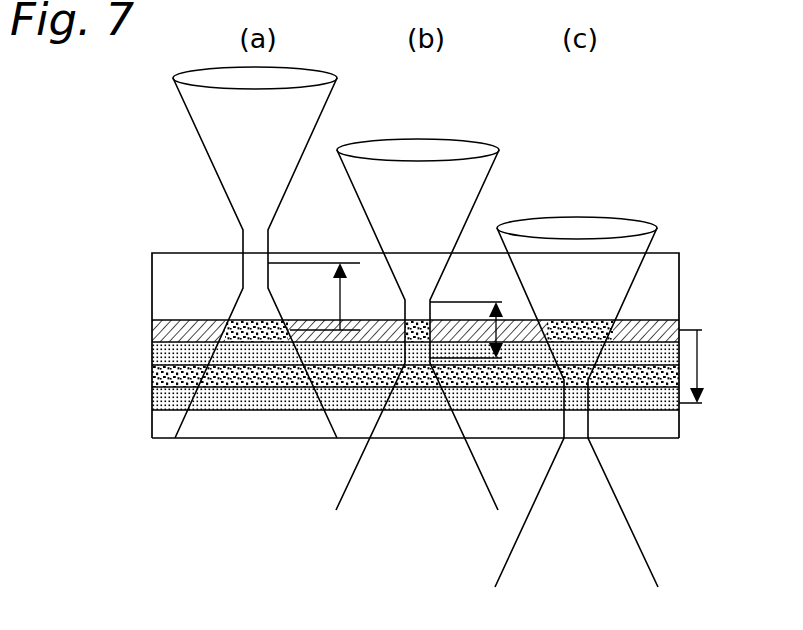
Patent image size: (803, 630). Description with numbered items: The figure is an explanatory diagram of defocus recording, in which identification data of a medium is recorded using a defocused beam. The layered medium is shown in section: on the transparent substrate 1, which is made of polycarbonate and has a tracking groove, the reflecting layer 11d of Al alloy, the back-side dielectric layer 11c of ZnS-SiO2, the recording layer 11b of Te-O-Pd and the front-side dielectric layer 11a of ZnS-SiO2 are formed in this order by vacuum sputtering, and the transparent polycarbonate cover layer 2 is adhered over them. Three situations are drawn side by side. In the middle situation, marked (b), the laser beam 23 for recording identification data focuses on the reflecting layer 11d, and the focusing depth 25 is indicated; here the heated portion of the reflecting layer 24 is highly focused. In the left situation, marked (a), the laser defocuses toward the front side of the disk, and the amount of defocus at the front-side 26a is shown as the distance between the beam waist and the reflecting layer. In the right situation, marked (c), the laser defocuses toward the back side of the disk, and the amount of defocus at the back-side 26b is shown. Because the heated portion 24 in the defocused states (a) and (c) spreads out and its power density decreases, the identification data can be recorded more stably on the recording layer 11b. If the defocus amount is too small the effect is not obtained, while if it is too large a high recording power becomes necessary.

The substrate 1 is at (167, 272).
The cover layer 2 is at (153, 425).
The front-side dielectric layer 11a is at (155, 400).
The recording layer 11b is at (155, 370).
The back-side dielectric layer 11c is at (158, 355).
The reflecting layer 11d is at (153, 320).
The laser beam 23 is at (458, 190).
The heated portion of the reflecting layer 24 is at (378, 338).
The focusing depth 25 is at (537, 313).
The amount of defocus at the front-side 26a is at (340, 293).
The amount of defocus at the back-side 26b is at (697, 362).